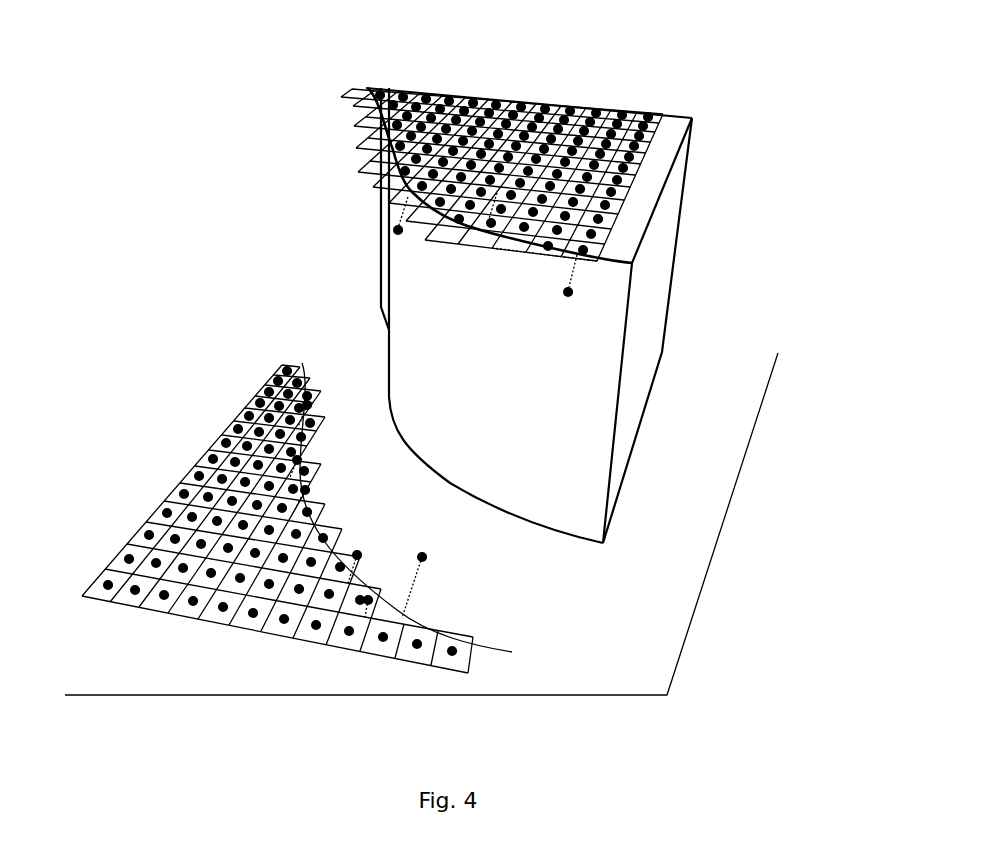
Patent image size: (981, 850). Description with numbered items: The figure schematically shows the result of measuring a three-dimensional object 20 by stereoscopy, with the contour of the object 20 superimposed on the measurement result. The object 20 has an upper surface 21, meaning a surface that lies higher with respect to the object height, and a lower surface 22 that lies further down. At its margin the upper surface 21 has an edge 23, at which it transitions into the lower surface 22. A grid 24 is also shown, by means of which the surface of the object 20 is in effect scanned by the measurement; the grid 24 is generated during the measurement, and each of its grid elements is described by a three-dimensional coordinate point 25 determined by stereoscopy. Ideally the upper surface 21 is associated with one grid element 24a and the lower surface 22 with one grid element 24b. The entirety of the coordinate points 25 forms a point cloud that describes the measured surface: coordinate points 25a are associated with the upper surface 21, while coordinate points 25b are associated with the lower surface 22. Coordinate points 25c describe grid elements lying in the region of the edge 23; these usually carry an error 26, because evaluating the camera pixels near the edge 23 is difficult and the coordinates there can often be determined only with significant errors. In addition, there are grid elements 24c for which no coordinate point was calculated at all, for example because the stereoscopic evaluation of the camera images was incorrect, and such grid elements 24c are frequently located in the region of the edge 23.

The three-dimensional object 20 is at (676, 76).
The upper surface 21 is at (660, 163).
The lower surface 22 is at (657, 660).
The edge 23 is at (618, 257).
The grid 24 is at (148, 482).
The grid element 24a is at (363, 110).
The grid element 24b is at (283, 362).
The grid element without coordinate point 24c is at (503, 243).
The three-dimensional coordinate point 25 is at (436, 638).
The coordinate points 25a is at (470, 98).
The coordinate points 25b is at (213, 458).
The coordinate points 25c is at (570, 294).
The error 26 is at (575, 270).